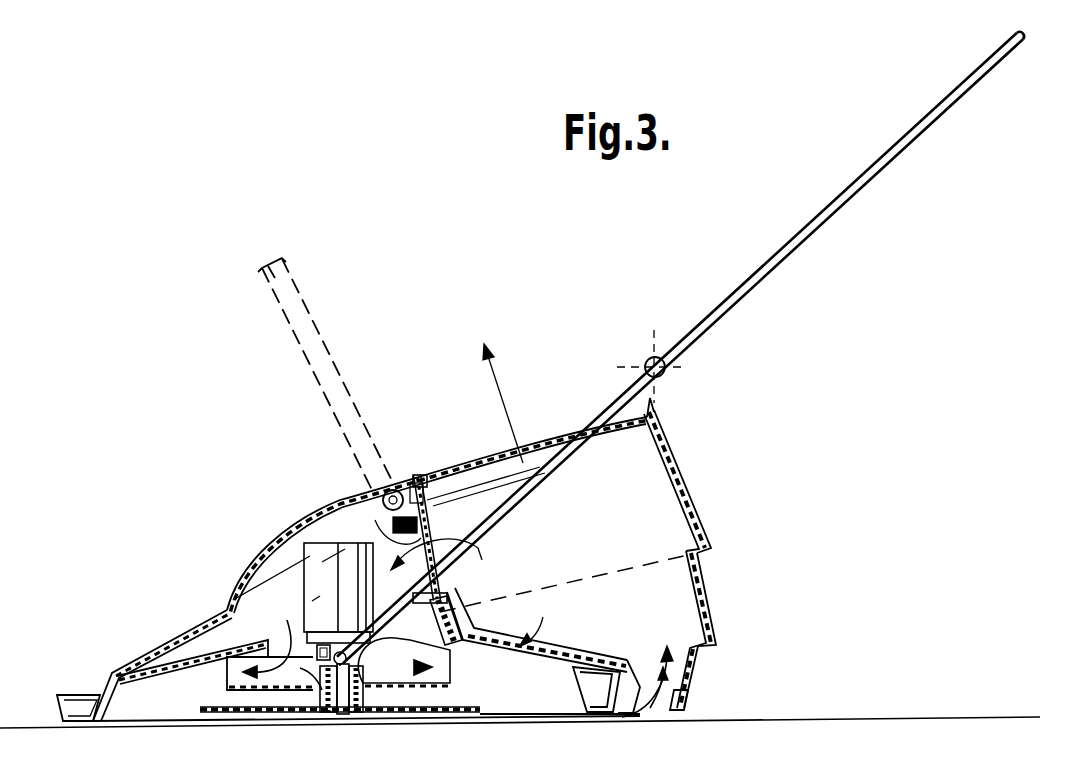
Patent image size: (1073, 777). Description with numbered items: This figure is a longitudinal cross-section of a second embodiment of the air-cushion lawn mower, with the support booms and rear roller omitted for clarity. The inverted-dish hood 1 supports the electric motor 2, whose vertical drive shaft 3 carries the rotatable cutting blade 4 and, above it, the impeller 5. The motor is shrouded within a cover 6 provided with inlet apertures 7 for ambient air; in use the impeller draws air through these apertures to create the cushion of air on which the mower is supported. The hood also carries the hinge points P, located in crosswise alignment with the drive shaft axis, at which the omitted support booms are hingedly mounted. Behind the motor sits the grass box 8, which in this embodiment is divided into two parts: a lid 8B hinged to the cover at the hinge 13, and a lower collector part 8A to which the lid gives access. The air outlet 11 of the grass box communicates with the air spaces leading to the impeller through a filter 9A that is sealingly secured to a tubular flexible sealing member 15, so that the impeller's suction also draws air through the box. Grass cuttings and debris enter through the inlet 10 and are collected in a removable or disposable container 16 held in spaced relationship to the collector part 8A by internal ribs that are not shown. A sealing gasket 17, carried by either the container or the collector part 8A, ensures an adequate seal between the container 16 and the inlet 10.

The hood 1 is at (120, 673).
The electric motor 2 is at (307, 575).
The drive shaft 3 is at (363, 705).
The cutting blade 4 is at (297, 713).
The impeller 5 is at (447, 672).
The cover 6 is at (268, 543).
The inlet apertures 7 is at (147, 663).
The grass box 8 is at (693, 464).
The collector part of grass box 8A is at (708, 570).
The lid of grass box 8B is at (560, 417).
The filter 9A is at (375, 520).
The inlet for grass cuttings 10 is at (660, 712).
The air outlet 11 is at (520, 465).
The hinge 13 is at (395, 489).
The tubular flexible sealing member 15 is at (440, 497).
The removable container 16 is at (703, 514).
The sealing gasket 17 is at (695, 691).
The hinge points P is at (313, 692).